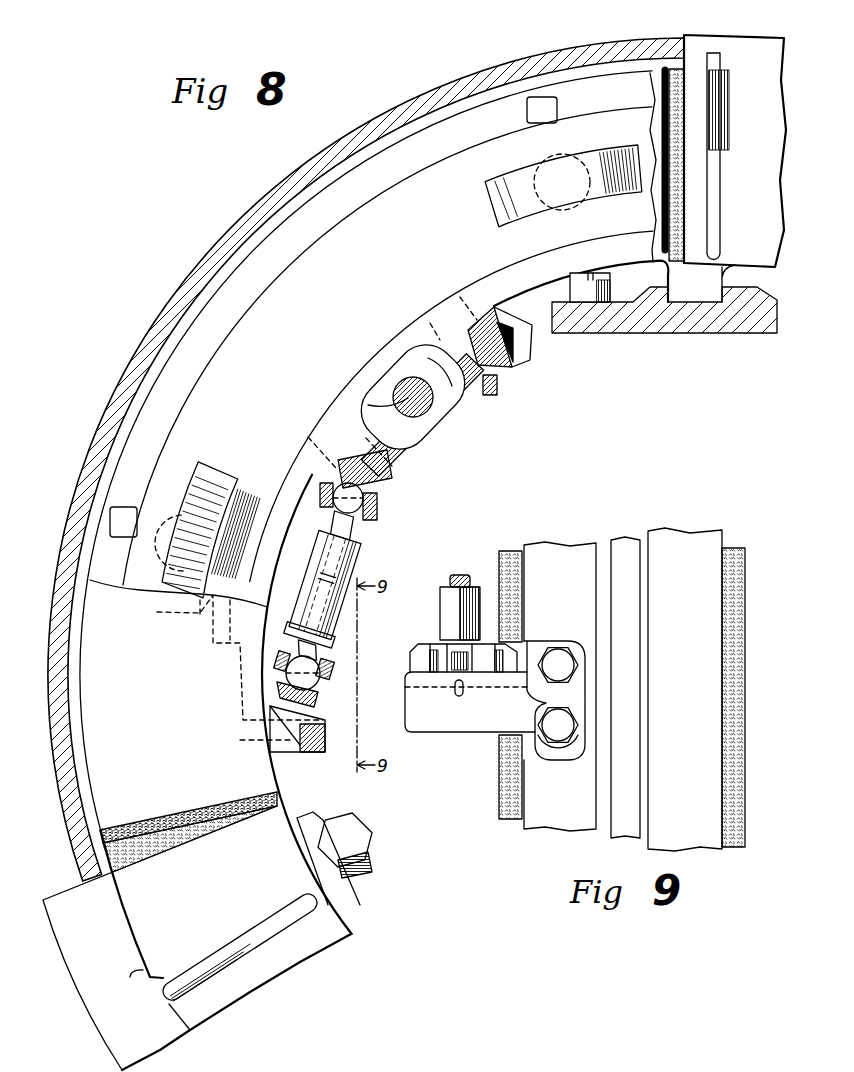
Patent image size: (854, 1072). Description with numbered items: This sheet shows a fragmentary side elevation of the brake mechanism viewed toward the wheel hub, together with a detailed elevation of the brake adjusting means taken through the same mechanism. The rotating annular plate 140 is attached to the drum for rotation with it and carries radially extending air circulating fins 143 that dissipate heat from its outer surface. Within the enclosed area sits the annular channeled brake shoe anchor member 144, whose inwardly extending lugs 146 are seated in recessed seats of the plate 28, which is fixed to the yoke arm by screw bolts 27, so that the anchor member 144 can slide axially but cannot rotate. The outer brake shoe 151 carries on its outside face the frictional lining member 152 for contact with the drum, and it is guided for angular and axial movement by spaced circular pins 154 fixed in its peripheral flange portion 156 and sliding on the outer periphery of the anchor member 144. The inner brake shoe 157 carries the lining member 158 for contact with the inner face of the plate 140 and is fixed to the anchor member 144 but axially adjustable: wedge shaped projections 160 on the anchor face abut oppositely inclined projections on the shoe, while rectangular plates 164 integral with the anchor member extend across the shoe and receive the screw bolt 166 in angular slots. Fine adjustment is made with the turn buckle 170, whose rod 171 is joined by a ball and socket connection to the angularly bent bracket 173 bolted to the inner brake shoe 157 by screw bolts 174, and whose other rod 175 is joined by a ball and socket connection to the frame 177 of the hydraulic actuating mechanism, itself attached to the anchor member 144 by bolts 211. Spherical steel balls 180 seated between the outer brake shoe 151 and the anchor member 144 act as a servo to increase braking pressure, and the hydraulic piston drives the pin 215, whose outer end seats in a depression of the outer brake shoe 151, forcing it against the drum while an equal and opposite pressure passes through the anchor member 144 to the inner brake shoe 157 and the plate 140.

In FIG. 8, the screw bolts 27 is at (584, 297).
In FIG. 8, the plate 28 is at (634, 327).
In FIG. 8, the annular plate 140 is at (257, 1020).
In FIG. 8, the air circulating fins 143 is at (700, 195).
In FIG. 8, the brake shoe anchor member 144 is at (328, 245).
In FIG. 9, the brake shoe anchor member 144 is at (620, 547).
In FIG. 8, the lugs 146 is at (704, 297).
In FIG. 8, the outer brake shoe 151 is at (333, 183).
In FIG. 9, the outer brake shoe 151 is at (680, 548).
In FIG. 9, the lining member 152 is at (740, 563).
In FIG. 8, the circular pins 154 is at (557, 100).
In FIG. 8, the peripheral flange portion 156 is at (480, 110).
In FIG. 8, the inner brake shoe 157 is at (660, 238).
In FIG. 9, the inner brake shoe 157 is at (560, 550).
In FIG. 8, the lining member 158 is at (680, 218).
In FIG. 9, the lining member 158 is at (510, 551).
In FIG. 8, the wedge shaped projections 160 is at (517, 192).
In FIG. 8, the rectangular plates 164 is at (340, 895).
In FIG. 8, the screw bolt 166 is at (352, 842).
In FIG. 8, the turn buckle 170 is at (363, 557).
In FIG. 9, the turn buckle 170 is at (450, 612).
In FIG. 8, the rod 171 is at (320, 657).
In FIG. 9, the rod 171 is at (450, 663).
In FIG. 8, the angularly bent bracket 173 is at (325, 712).
In FIG. 9, the angularly bent bracket 173 is at (477, 720).
In FIG. 8, the screw bolts 174 is at (305, 740).
In FIG. 9, the screw bolts 174 is at (550, 732).
In FIG. 8, the rod 175 is at (367, 528).
In FIG. 8, the frame 177 is at (410, 458).
In FIG. 8, the spherical steel balls 180 is at (562, 165).
In FIG. 8, the bolts 211 is at (504, 383).
In FIG. 8, the pin 215 is at (418, 402).